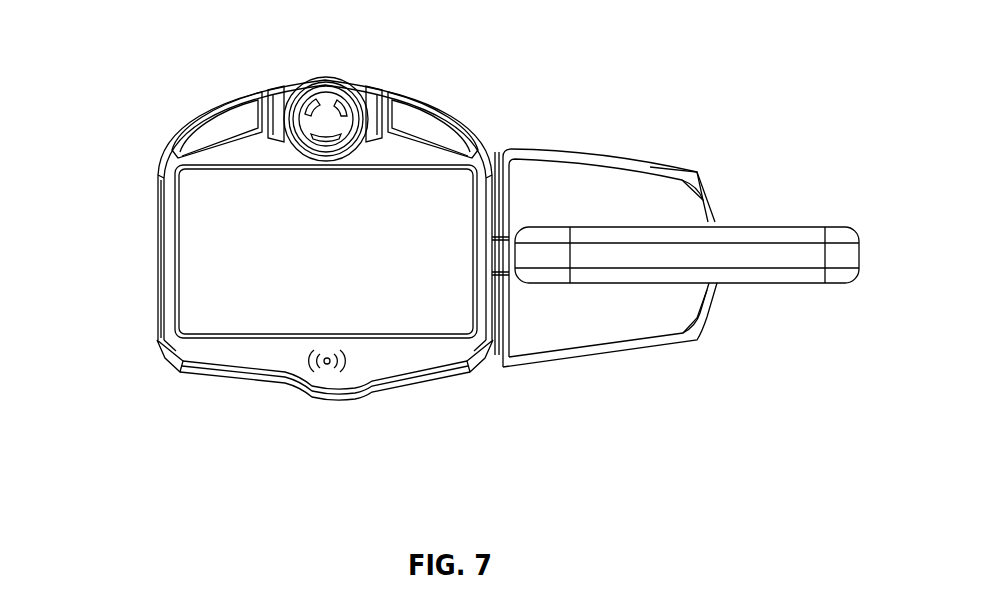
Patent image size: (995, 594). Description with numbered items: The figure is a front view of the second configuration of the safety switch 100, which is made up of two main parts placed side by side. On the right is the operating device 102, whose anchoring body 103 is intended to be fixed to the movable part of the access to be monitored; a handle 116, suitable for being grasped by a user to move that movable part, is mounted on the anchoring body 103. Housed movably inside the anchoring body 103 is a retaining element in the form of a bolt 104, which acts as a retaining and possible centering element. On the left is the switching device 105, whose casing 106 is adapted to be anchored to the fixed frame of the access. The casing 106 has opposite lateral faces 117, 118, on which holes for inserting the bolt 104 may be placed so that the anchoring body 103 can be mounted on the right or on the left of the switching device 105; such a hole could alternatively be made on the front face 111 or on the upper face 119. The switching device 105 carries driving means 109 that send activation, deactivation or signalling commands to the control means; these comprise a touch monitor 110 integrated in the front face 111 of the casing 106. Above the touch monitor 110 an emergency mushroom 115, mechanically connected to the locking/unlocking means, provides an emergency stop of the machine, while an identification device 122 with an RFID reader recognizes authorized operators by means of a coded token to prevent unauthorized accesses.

The switch 100 is at (800, 83).
The operating device 102 is at (800, 200).
The anchoring body 103 is at (667, 343).
The bolt 104 is at (500, 347).
The switching device 105 is at (158, 142).
The casing 106 is at (260, 88).
The driving means 109 is at (163, 347).
The touch monitor 110 is at (354, 272).
The front face 111 is at (247, 355).
The emergency mushroom 115 is at (330, 87).
The handle 116 is at (820, 285).
The lateral face 117 is at (500, 150).
The lateral face 118 is at (160, 253).
The upper face 119 is at (445, 127).
The identification device 122 is at (330, 373).